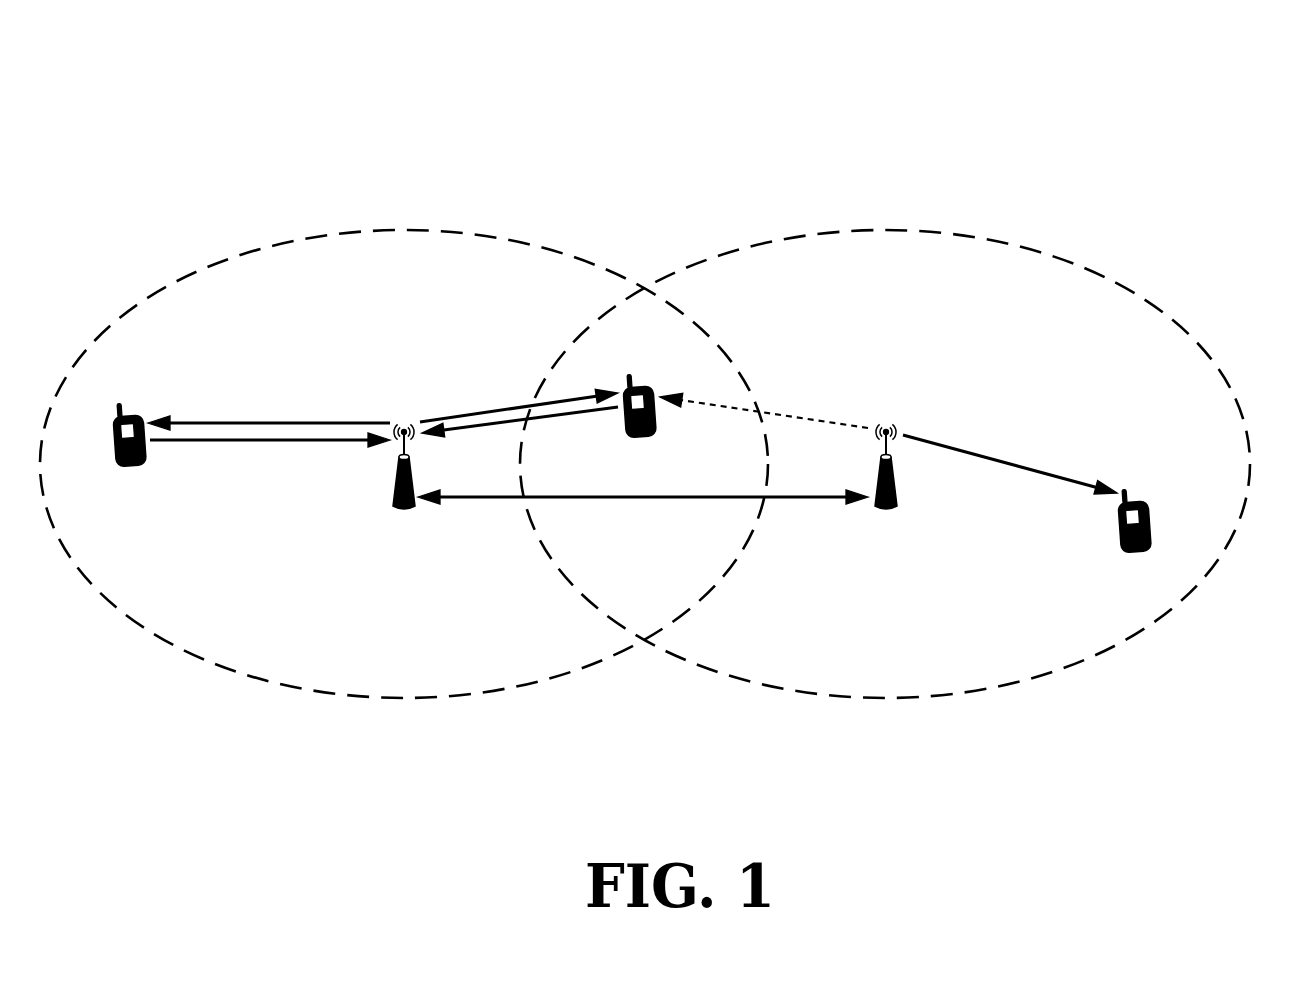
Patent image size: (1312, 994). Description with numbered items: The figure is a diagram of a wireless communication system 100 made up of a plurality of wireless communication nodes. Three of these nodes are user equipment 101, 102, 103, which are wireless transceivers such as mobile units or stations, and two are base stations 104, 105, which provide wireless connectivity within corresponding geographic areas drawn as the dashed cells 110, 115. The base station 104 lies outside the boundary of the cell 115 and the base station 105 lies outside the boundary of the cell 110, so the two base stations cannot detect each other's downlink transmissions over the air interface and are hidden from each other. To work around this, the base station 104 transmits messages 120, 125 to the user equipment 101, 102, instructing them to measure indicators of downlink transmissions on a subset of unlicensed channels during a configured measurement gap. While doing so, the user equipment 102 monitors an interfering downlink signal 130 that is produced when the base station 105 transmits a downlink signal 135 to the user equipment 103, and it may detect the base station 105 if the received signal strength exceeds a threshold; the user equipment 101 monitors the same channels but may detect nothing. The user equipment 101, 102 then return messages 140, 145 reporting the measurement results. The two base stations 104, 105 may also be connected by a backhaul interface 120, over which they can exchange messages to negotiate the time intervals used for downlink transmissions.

The wireless communication system 100 is at (1192, 107).
The user equipment 101 is at (127, 470).
The user equipment 102 is at (638, 442).
The user equipment 103 is at (1138, 557).
The base station 104 is at (405, 510).
The base station 105 is at (885, 510).
The cell 110 is at (400, 698).
The cell 115 is at (880, 698).
The message 120 is at (302, 420).
The message 125 is at (485, 407).
The interfering downlink signal 130 is at (780, 412).
The downlink signal 135 is at (982, 452).
The message 140 is at (225, 443).
The message 145 is at (537, 410).